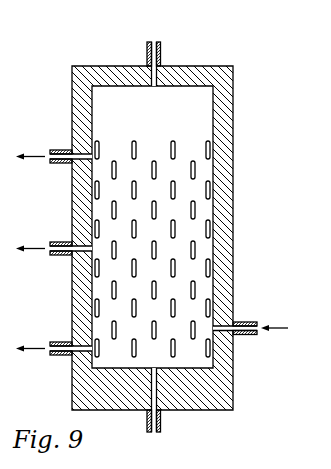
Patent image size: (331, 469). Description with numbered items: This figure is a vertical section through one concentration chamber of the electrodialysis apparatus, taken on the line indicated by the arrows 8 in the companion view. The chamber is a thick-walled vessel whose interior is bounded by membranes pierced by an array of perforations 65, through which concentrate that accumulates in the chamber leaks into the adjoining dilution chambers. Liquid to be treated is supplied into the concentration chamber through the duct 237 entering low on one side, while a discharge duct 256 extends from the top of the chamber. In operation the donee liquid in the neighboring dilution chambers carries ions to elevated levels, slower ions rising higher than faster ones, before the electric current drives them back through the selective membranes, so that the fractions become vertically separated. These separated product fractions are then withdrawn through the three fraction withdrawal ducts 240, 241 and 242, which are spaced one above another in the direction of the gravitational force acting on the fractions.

The discharge duct 256 is at (161, 53).
The fraction withdrawal duct 242 is at (64, 165).
The fraction withdrawal duct 241 is at (64, 257).
The fraction withdrawal duct 240 is at (64, 358).
The supply duct 237 is at (244, 322).
The perforations 65 is at (173, 219).
The section line 8- 8 is at (154, 42).